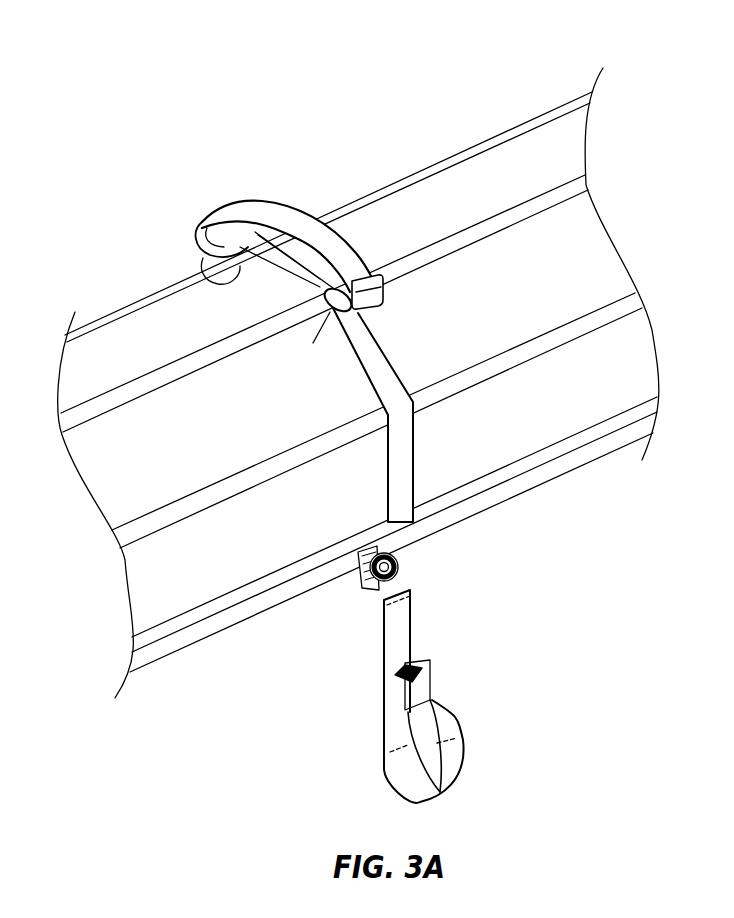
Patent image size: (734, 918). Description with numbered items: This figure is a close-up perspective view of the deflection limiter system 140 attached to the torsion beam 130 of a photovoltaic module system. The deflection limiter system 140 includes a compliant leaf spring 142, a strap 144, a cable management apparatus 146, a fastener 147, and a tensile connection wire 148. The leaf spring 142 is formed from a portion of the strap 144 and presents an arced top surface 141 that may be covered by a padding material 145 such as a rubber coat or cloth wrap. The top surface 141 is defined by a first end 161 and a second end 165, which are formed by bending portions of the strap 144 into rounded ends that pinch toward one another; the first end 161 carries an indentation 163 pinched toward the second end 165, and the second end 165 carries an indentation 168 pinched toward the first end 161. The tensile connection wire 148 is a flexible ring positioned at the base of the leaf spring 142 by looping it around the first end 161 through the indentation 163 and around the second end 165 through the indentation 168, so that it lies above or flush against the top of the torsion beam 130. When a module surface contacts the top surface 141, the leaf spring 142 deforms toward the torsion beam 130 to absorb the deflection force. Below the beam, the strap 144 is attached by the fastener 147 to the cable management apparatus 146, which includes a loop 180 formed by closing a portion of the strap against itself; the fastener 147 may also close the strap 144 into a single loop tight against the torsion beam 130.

The torsion beam 130 is at (588, 241).
The deflection limiter system 140 is at (128, 94).
The leaf spring 142 is at (290, 199).
The top surface 141 is at (268, 203).
The padding material 145 is at (224, 207).
The first end 161 is at (197, 197).
The indentation 163 is at (222, 262).
The tensile connection wire 148 is at (227, 261).
The indentation 168 is at (318, 334).
The second end 165 is at (375, 268).
The strap 144 is at (387, 367).
The fastener 147 is at (399, 562).
The cable management apparatus 146 is at (402, 628).
The loop 180 is at (467, 700).